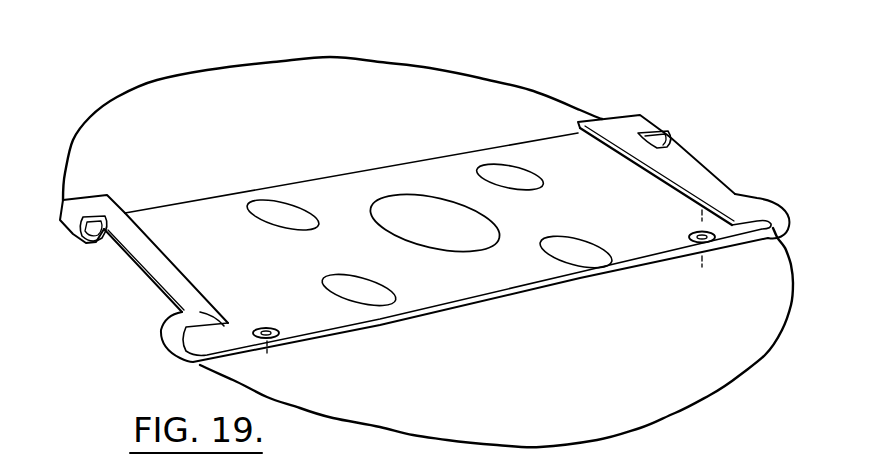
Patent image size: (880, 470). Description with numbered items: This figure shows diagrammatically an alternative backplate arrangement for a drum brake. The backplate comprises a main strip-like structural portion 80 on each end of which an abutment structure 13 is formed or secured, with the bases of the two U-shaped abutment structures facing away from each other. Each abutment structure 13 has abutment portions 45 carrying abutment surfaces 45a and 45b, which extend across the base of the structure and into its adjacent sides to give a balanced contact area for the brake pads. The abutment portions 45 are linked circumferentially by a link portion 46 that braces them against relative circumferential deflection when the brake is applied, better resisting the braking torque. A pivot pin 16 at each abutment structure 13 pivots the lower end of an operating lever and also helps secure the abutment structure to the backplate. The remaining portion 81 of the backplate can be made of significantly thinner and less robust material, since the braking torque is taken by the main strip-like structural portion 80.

The abutment structure 13 is at (449, 228).
The pivot pin 16 is at (268, 336).
The abutment portion 45 is at (393, 195).
The abutment surface 45a is at (130, 215).
The abutment surface 45b is at (167, 316).
The link portion 46 is at (182, 284).
The main strip-like structural portion 80 is at (493, 277).
The remaining portion of the backplate 81 is at (300, 124).